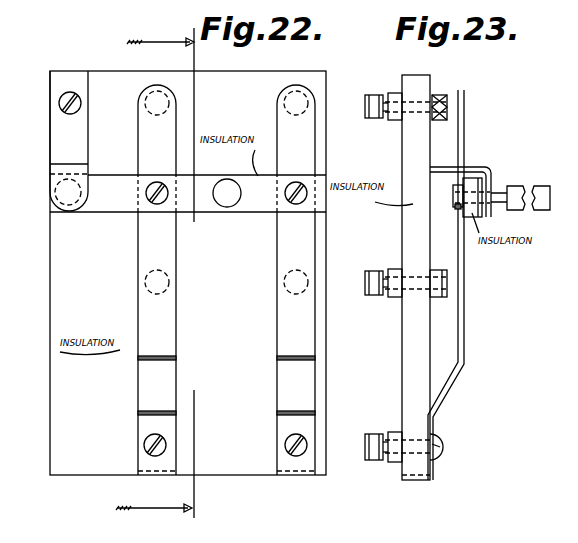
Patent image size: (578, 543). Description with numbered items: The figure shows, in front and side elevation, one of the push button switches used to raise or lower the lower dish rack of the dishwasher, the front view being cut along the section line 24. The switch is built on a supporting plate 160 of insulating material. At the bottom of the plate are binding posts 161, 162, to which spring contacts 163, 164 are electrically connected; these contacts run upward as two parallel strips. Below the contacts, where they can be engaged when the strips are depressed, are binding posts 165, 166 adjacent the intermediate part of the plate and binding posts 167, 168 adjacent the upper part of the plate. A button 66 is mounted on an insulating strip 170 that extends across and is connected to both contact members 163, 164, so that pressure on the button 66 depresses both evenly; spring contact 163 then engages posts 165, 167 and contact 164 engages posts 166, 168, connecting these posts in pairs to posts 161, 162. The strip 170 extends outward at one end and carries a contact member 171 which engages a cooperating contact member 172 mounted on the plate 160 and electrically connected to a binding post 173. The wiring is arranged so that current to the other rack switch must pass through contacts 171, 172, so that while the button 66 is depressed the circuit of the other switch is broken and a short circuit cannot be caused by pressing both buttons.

In FIG. 22, the section line 24- 24 is at (155, 277).
In FIG. 22, the button 66 is at (227, 207).
In FIG. 23, the button 66 is at (540, 200).
In FIG. 22, the supporting plate 160 is at (58, 296).
In FIG. 23, the supporting plate 160 is at (412, 362).
In FIG. 22, the binding post 161 is at (144, 446).
In FIG. 23, the binding post 161 is at (439, 444).
In FIG. 22, the binding post 162 is at (285, 446).
In FIG. 22, the spring contact 163 is at (160, 323).
In FIG. 23, the spring contact 163 is at (465, 113).
In FIG. 22, the spring contact 164 is at (300, 326).
In FIG. 22, the binding post 165 is at (170, 274).
In FIG. 23, the binding post 165 is at (448, 285).
In FIG. 22, the binding post 166 is at (300, 276).
In FIG. 22, the binding post 167 is at (148, 104).
In FIG. 23, the binding post 167 is at (446, 100).
In FIG. 22, the binding post 168 is at (288, 106).
In FIG. 22, the insulating strip 170 is at (121, 203).
In FIG. 23, the insulating strip 170 is at (460, 203).
In FIG. 22, the contact member 171 is at (67, 214).
In FIG. 23, the contact member 171 is at (492, 196).
In FIG. 22, the cooperating contact member 172 is at (73, 143).
In FIG. 23, the cooperating contact member 172 is at (484, 190).
In FIG. 23, the binding post 173 is at (378, 100).